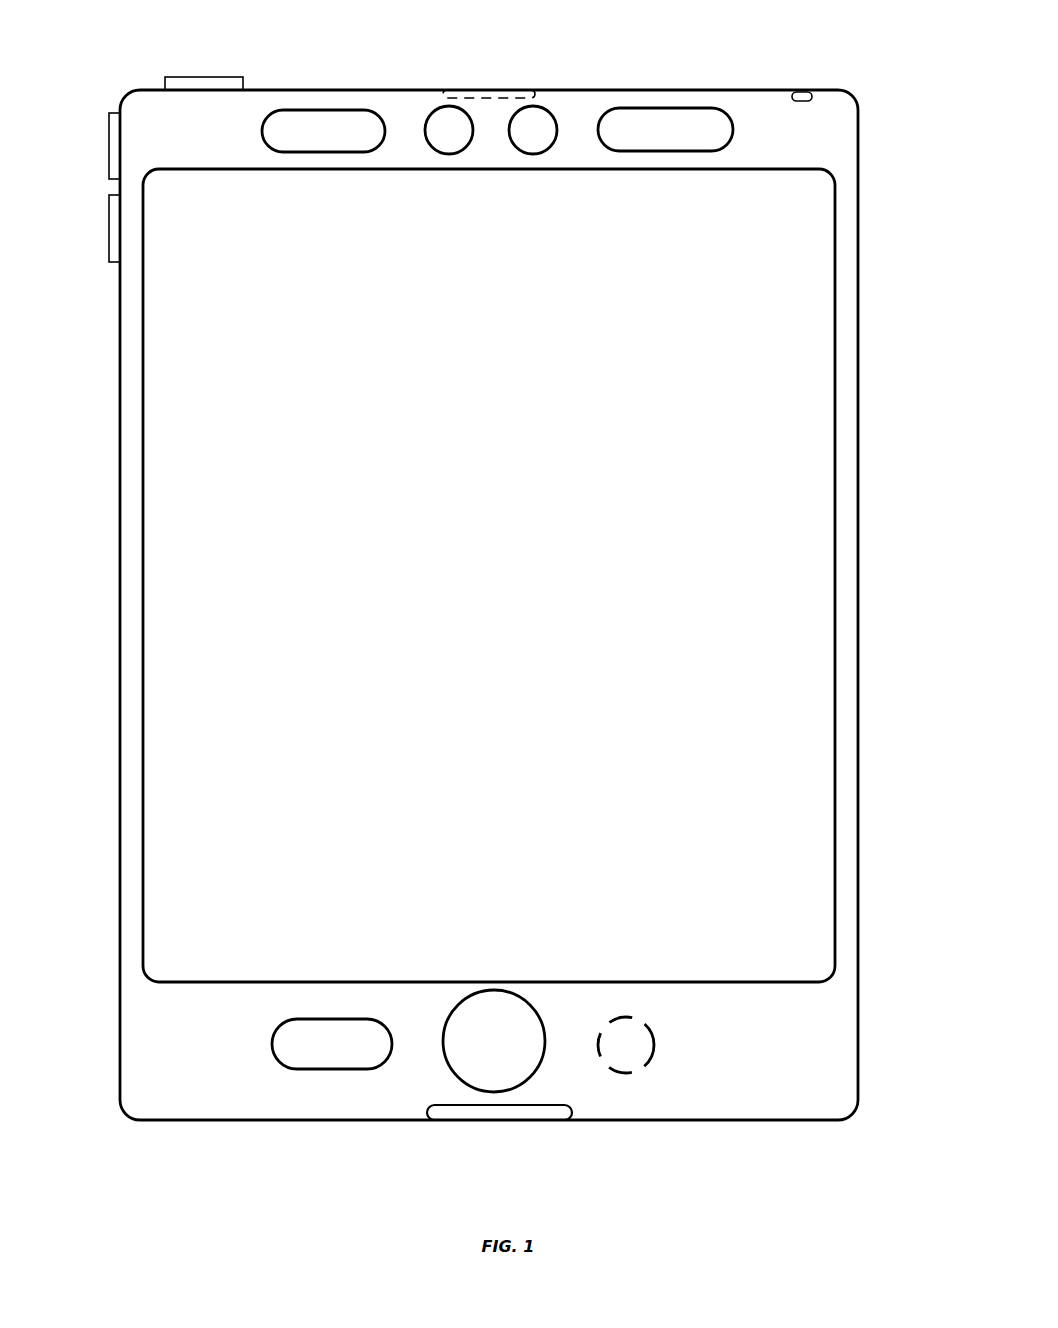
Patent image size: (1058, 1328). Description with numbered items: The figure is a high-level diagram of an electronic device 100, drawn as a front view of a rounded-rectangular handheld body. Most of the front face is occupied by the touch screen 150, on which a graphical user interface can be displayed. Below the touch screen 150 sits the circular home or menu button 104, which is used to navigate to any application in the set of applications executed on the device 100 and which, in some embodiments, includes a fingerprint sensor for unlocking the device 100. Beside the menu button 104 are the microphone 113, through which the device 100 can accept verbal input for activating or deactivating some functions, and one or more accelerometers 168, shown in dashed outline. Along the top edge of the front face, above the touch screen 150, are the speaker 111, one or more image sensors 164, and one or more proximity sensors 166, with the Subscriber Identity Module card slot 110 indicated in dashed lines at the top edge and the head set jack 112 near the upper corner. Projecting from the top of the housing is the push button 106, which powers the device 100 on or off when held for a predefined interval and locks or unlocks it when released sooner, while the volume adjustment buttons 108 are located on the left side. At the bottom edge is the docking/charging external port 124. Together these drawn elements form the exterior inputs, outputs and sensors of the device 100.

The electronic device 100 is at (891, 90).
The menu button 104 is at (494, 1041).
The push button 106 is at (210, 77).
The volume adjustment buttons 108 is at (112, 143).
The Subscriber Identity Module (SIM) card slot 110 is at (469, 90).
The speaker 111 is at (308, 139).
The head set jack 112 is at (801, 92).
The microphone 113 is at (317, 1053).
The docking/charging external port 124 is at (541, 1122).
The touch screen 150 is at (835, 468).
The image sensors 164 is at (434, 139).
The proximity sensors 166 is at (650, 138).
The accelerometers 168 is at (611, 1054).